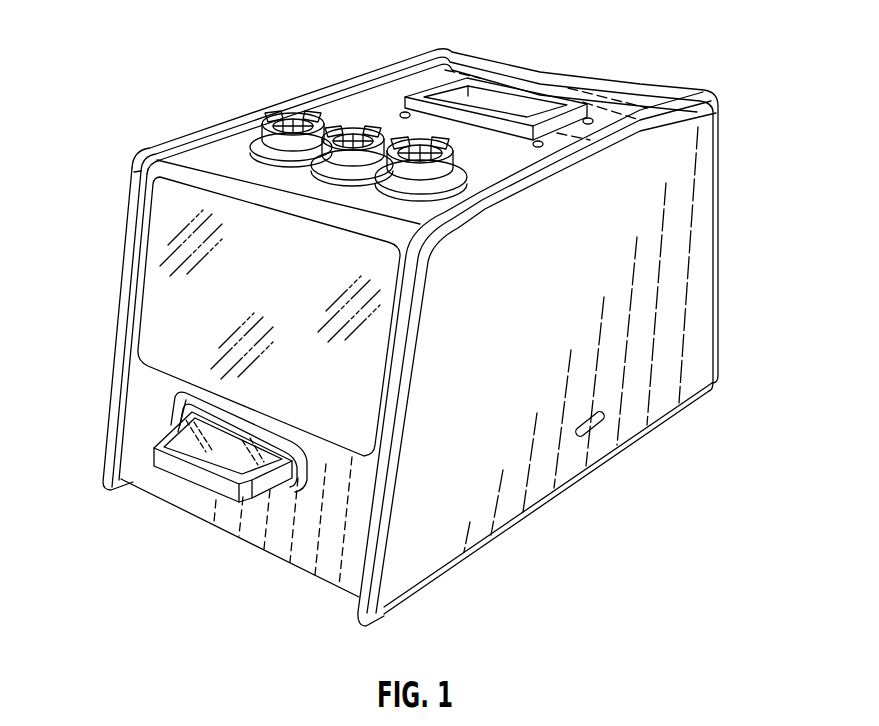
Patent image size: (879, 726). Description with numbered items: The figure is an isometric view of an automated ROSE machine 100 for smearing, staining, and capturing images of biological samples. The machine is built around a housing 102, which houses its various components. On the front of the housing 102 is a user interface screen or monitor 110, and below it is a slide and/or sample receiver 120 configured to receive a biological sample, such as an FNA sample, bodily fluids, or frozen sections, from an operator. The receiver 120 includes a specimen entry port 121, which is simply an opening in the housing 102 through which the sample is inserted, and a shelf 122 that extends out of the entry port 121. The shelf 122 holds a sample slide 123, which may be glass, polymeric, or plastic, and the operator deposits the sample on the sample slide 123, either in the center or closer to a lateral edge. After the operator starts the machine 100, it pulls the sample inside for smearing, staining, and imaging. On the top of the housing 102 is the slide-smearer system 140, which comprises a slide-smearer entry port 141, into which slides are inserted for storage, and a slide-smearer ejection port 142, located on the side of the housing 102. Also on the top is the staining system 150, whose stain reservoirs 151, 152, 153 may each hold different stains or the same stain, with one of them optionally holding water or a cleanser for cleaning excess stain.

The automated ROSE machine 100 is at (137, 48).
The housing 102 is at (700, 227).
The user interface screen or monitor 110 is at (157, 312).
The slide and/or sample receiver 120 is at (185, 492).
The specimen entry port 121 is at (307, 478).
The shelf 122 is at (243, 499).
The sample slide 123 is at (178, 432).
The slide-smearer system 140 is at (581, 95).
The slide-smearer entry port 141 is at (514, 87).
The slide-smearer ejection port 142 is at (600, 420).
The staining system 150 is at (348, 106).
The stain reservoir 151 is at (292, 126).
The stain reservoir 152 is at (365, 132).
The stain reservoir 153 is at (414, 156).